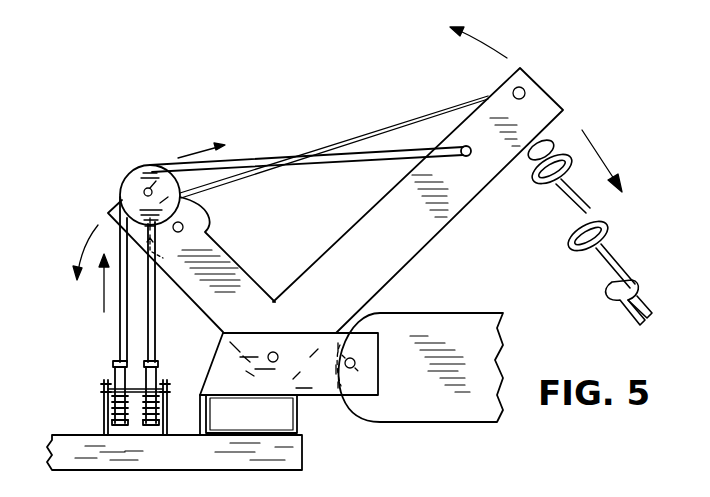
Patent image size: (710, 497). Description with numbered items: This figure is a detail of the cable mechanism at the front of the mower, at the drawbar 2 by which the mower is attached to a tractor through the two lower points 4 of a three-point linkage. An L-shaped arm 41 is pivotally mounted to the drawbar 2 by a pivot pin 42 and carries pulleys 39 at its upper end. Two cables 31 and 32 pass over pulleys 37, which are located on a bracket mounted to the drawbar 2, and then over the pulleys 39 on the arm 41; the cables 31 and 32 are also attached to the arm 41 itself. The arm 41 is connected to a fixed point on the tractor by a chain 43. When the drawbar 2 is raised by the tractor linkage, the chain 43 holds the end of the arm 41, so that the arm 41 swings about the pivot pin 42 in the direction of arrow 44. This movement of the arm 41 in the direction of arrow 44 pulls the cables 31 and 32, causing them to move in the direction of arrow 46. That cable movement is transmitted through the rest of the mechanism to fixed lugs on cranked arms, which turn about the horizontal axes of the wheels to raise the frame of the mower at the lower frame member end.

The drawbar 2 is at (291, 421).
The lower points 4 is at (356, 363).
The cable 31 is at (156, 333).
The cable 32 is at (118, 317).
The pulleys 37 is at (113, 363).
The pulleys 39 is at (148, 165).
The L-shaped arm 41 is at (453, 218).
The pivot pin 42 is at (270, 363).
The chain 43 is at (607, 242).
The arrow 44 is at (597, 150).
The arrow 46 is at (103, 296).